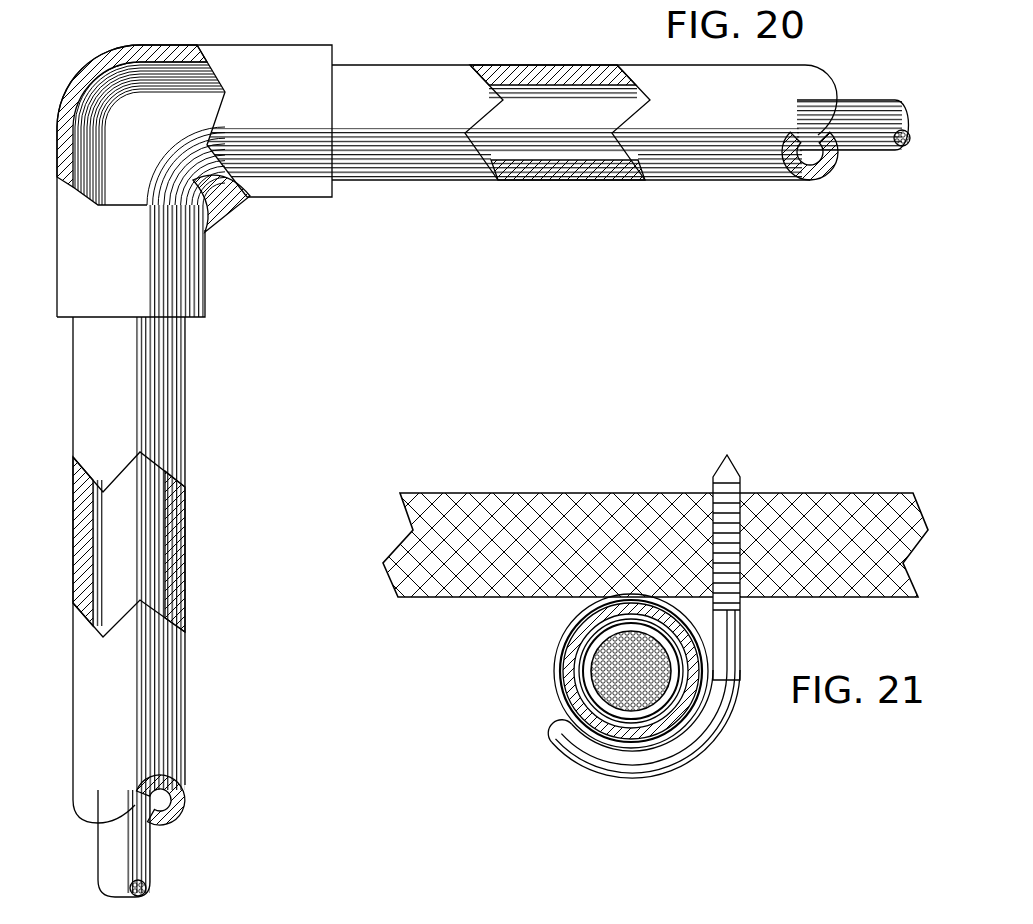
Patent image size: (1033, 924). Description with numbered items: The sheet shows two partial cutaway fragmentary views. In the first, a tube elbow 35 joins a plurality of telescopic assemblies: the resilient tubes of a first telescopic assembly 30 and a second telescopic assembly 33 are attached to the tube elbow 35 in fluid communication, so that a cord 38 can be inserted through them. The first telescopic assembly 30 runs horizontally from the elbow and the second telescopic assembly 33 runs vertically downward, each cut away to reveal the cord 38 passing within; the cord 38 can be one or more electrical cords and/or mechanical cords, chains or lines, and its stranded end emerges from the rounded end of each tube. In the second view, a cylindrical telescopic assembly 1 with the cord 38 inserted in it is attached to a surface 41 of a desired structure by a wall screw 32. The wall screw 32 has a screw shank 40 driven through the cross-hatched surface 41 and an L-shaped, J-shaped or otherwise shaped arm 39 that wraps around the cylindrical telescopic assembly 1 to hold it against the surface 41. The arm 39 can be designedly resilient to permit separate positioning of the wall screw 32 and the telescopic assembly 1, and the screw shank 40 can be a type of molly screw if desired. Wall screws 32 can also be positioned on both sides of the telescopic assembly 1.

In FIG. 21, the telescopic assembly 1 is at (510, 671).
In FIG. 20, the first telescopic assembly 30 is at (432, 222).
In FIG. 21, the wall screw 32 is at (722, 787).
In FIG. 20, the second telescopic assembly 33 is at (250, 390).
In FIG. 20, the tube elbow 35 is at (288, 110).
In FIG. 20, the cord 38 is at (167, 147).
In FIG. 21, the cord 38 is at (631, 681).
In FIG. 21, the arm 39 is at (640, 778).
In FIG. 21, the screw shank 40 is at (733, 540).
In FIG. 21, the surface 41 is at (587, 508).